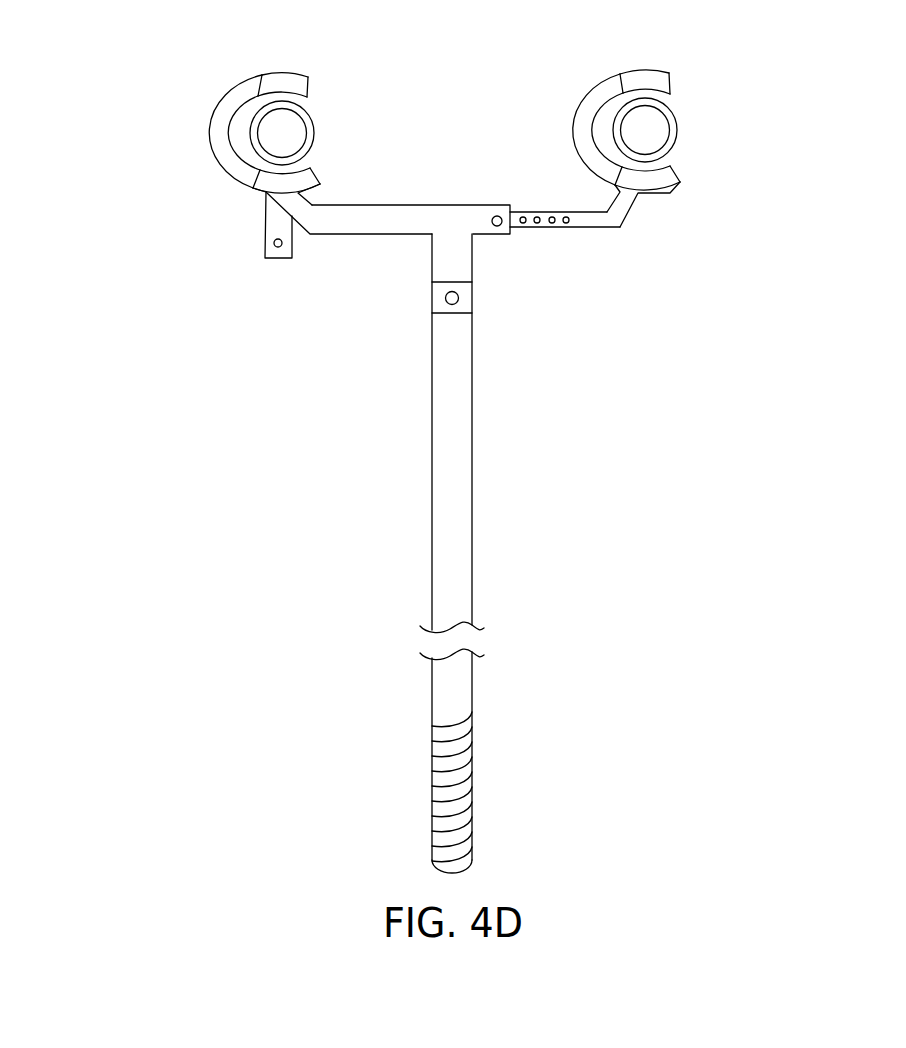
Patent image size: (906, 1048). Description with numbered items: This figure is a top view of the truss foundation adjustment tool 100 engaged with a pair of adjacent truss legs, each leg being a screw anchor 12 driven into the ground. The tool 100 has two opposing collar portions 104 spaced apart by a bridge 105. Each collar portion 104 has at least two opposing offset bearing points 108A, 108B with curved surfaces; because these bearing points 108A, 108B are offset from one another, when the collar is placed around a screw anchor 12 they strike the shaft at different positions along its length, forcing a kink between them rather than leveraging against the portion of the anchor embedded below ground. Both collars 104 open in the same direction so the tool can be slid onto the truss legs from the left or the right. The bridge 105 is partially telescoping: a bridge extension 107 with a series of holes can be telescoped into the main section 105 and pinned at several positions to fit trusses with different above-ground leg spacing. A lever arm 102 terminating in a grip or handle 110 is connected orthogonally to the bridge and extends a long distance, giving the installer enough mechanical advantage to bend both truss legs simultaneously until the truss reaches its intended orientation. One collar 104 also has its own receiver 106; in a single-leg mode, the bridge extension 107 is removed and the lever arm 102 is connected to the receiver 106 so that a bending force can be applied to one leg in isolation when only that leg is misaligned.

The truss foundation adjustment tool 100 is at (638, 444).
The lever arm 102 is at (510, 572).
The collar portion 104 is at (166, 73).
The bridge 105 is at (370, 235).
The receiver 106 is at (265, 238).
The bridge extension 107 is at (607, 229).
The offset bearing point 108A is at (321, 182).
The offset bearing point 108B is at (283, 71).
The screw anchor 12 is at (316, 133).
The grip or handle 110 is at (473, 790).